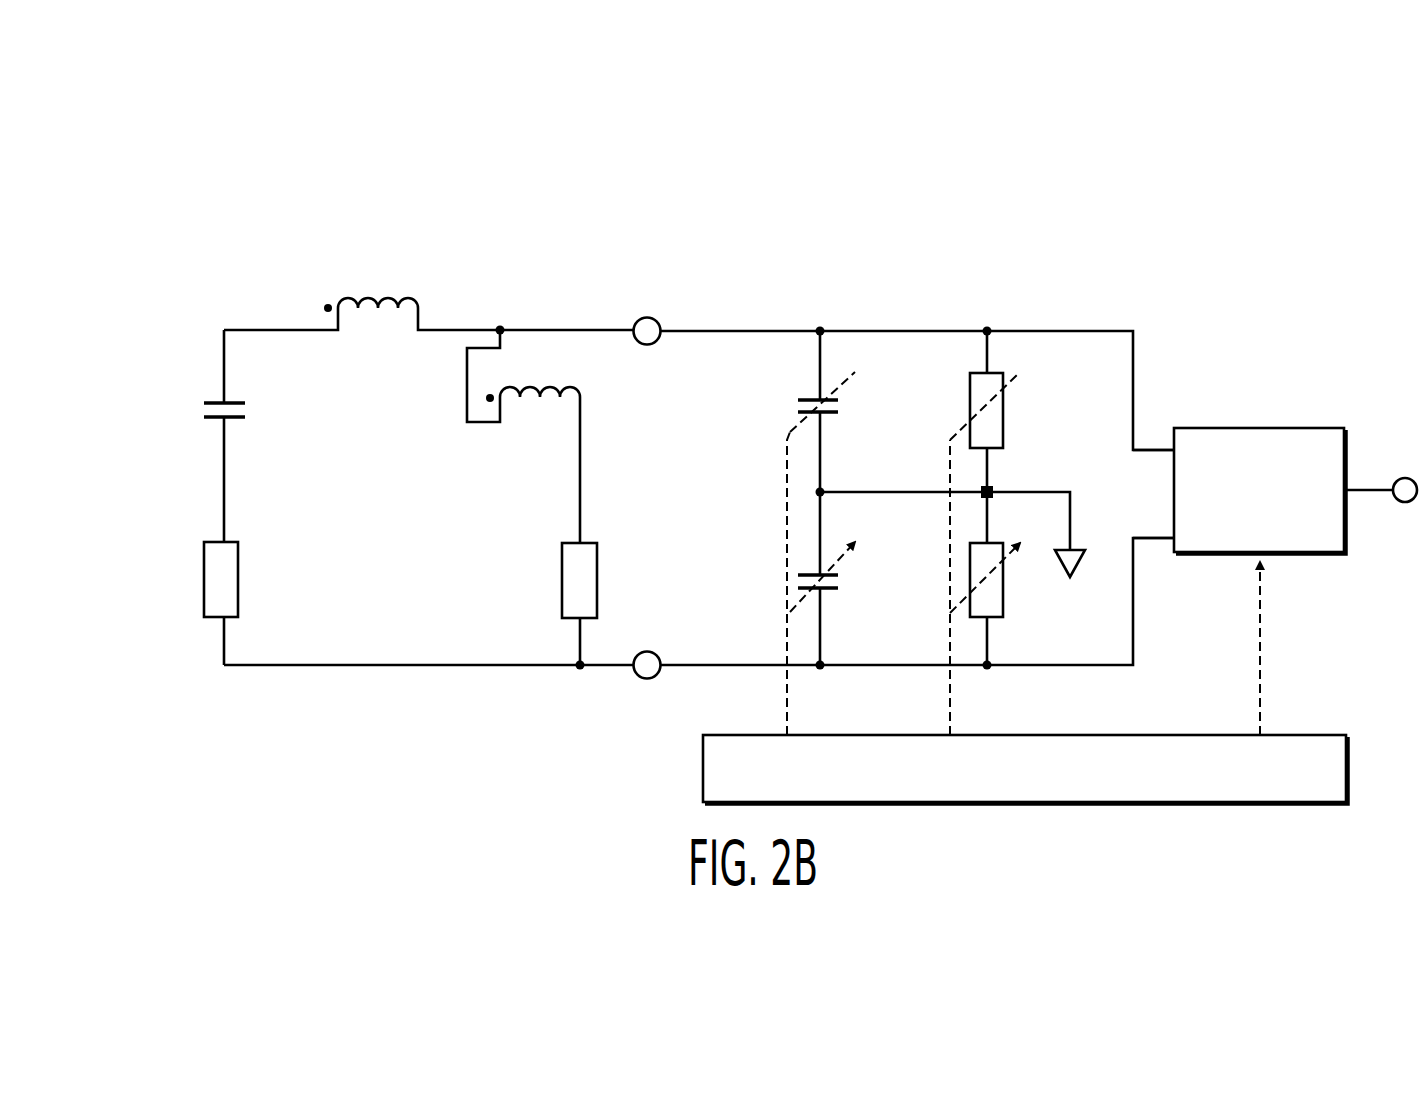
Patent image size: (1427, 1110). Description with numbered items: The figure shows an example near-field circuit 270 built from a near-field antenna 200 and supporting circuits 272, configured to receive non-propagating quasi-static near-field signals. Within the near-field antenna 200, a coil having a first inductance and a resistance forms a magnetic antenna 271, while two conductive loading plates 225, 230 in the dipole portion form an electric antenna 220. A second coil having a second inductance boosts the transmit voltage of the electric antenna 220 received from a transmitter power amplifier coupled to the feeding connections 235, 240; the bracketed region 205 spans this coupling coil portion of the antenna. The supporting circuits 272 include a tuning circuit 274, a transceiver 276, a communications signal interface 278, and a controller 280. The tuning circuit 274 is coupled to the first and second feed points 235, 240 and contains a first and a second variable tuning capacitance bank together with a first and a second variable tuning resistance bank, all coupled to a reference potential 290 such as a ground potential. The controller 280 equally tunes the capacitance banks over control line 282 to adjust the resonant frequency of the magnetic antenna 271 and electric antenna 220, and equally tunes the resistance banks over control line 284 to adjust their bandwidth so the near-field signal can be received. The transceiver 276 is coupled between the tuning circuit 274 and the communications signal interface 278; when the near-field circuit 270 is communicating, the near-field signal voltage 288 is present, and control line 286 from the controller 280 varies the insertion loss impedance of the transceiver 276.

The near-field circuit 270 is at (166, 116).
The near-field antenna 200 is at (663, 193).
The supporting circuits 272 is at (1380, 193).
The electric antenna 220 is at (300, 325).
The inductive coupling element 205 is at (585, 325).
The tuning circuit 274 is at (1043, 325).
The loading plate 230 is at (210, 400).
The loading plate 225 is at (215, 420).
The feeding connection 240 is at (646, 345).
The feeding connection 235 is at (657, 653).
The magnetic antenna 271 is at (460, 675).
The control line 282 is at (787, 462).
The control line 284 is at (950, 457).
The near-field signal voltage 288 is at (1162, 510).
The transceiver 276 is at (1281, 524).
The communications signal interface 278 is at (1405, 478).
The reference potential 290 is at (1072, 570).
The control line 286 is at (1262, 637).
The controller 280 is at (1346, 765).